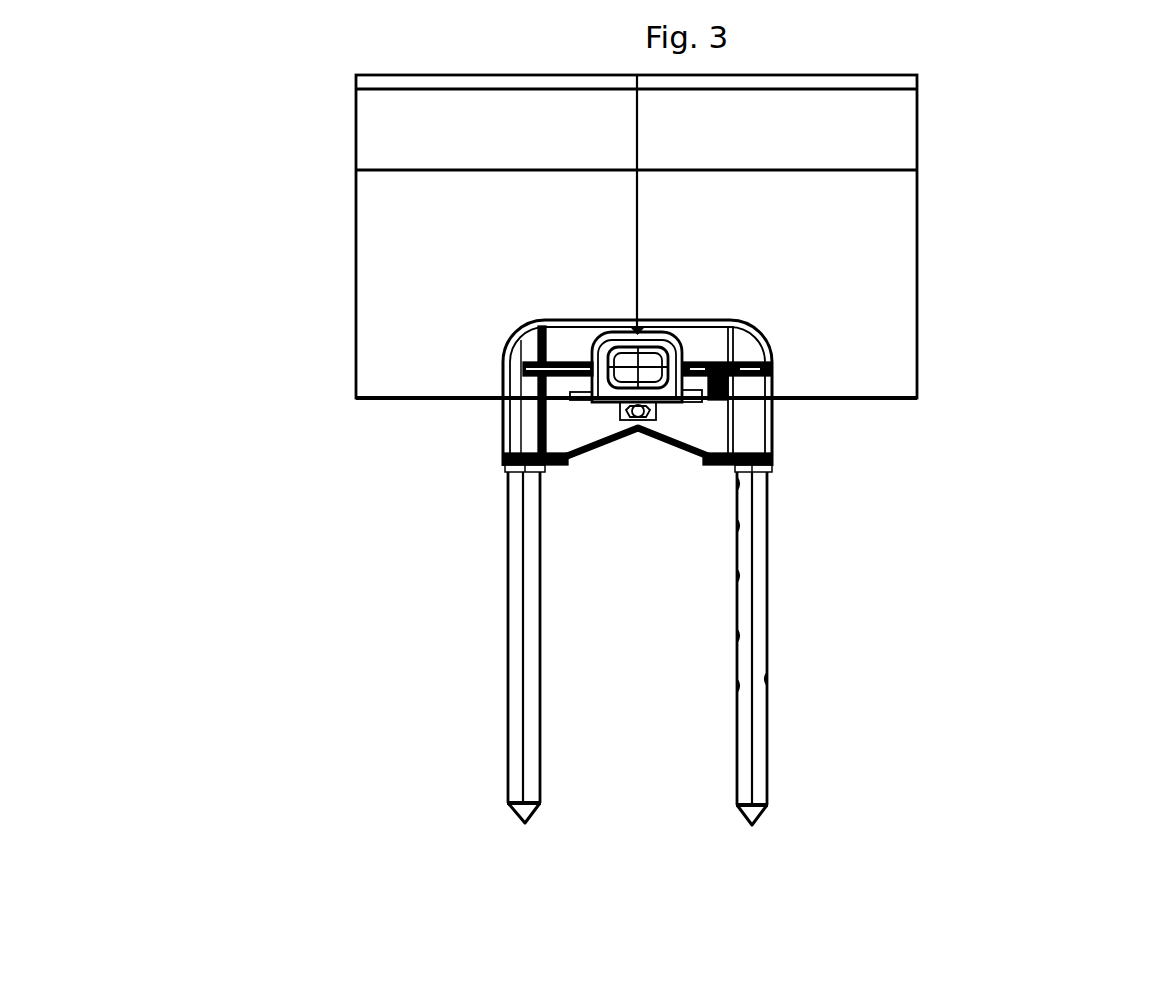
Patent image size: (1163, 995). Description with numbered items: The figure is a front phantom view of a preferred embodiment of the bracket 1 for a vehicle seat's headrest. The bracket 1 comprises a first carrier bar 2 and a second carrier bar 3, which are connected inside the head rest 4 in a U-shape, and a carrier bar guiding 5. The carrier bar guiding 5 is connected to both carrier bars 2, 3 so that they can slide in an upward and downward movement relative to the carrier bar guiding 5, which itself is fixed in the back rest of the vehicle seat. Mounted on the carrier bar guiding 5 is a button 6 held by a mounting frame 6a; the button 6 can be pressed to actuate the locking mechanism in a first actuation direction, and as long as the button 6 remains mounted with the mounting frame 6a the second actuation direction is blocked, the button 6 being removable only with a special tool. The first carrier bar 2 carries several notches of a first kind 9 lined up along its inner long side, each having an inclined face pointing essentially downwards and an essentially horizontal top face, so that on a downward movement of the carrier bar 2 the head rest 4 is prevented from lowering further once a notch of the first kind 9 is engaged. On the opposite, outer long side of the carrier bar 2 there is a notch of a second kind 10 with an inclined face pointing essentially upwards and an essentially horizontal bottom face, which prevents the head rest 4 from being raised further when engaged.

The bracket 1 is at (976, 253).
The first carrier bar 2 is at (737, 718).
The second carrier bar 3 is at (527, 687).
The head rest 4 is at (423, 253).
The carrier bar guiding 5 is at (752, 427).
The button 6 is at (588, 387).
The mounting frame 6a is at (573, 367).
The notch of a first kind 9 is at (733, 585).
The notch of a second kind 10 is at (766, 680).